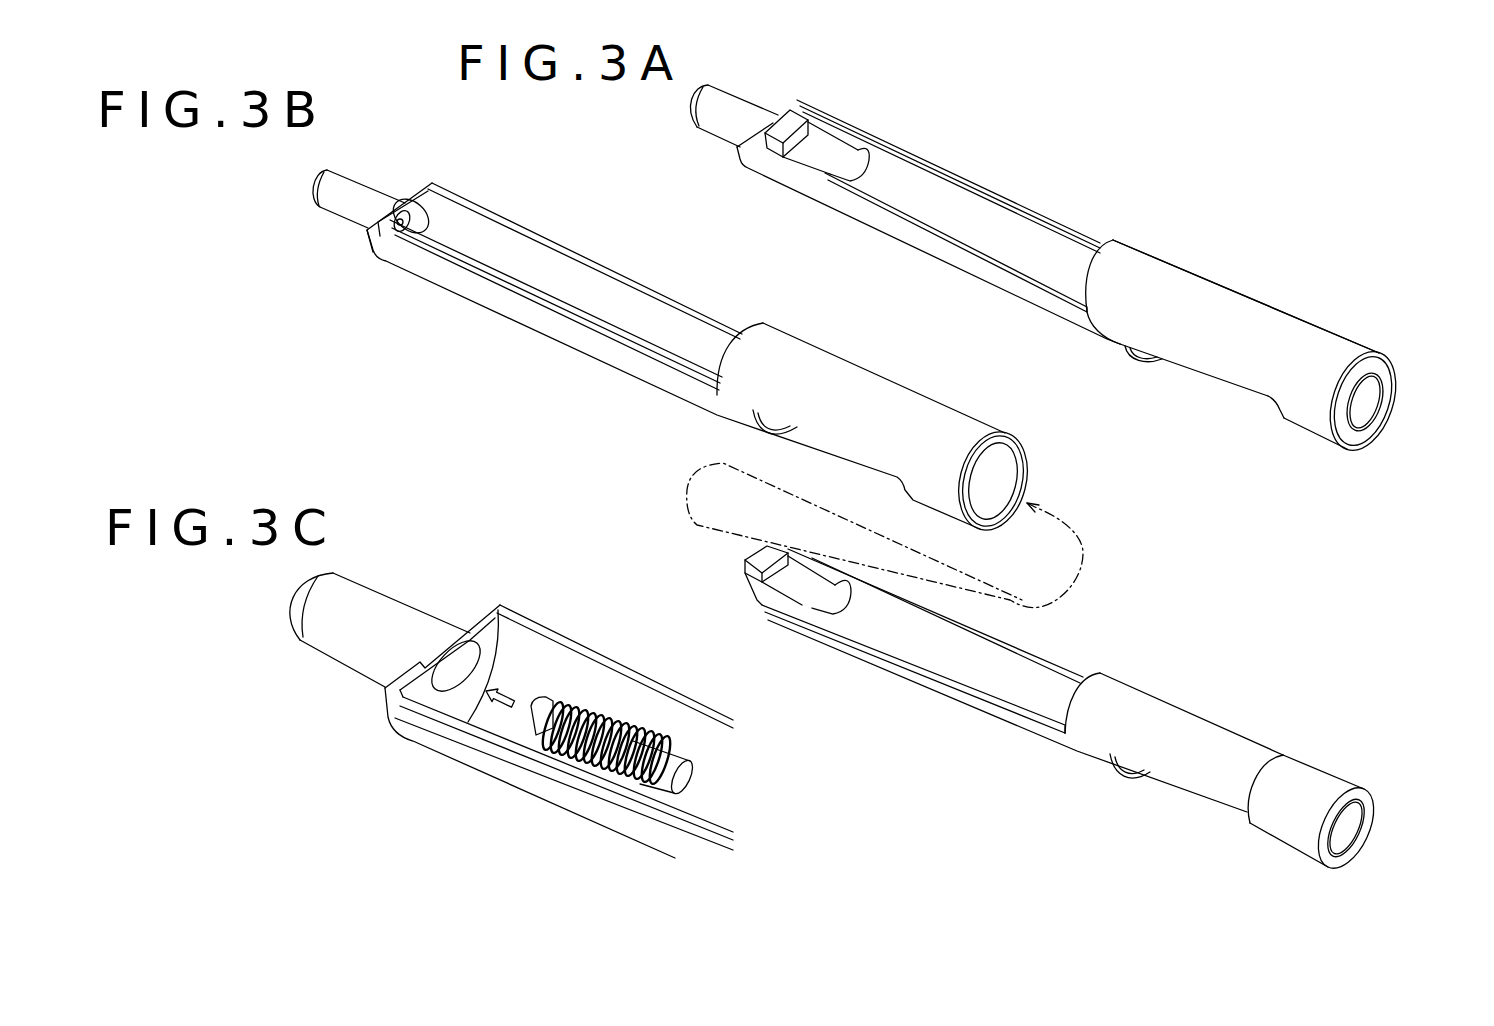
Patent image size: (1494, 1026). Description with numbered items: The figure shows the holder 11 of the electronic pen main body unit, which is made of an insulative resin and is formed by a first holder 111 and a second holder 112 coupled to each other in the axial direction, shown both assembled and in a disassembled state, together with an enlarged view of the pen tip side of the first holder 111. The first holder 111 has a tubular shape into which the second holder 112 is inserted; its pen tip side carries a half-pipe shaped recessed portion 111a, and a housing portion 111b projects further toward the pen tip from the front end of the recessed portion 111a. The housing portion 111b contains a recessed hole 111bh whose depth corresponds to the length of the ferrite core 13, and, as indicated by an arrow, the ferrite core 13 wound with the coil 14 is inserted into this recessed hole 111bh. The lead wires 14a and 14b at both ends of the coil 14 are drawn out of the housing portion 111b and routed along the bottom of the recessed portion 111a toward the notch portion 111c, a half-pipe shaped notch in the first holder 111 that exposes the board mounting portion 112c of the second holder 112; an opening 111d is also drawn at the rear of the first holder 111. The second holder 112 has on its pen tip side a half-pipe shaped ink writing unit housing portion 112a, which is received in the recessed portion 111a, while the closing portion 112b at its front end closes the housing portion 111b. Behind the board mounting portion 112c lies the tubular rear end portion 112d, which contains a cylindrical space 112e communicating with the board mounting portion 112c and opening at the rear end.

In FIG. 3A, the holder 11 is at (1224, 280).
In FIG. 3A, the first holder 111 is at (912, 240).
In FIG. 3B, the first holder 111 is at (847, 373).
In FIG. 3C, the first holder 111 is at (640, 828).
In FIG. 3B, the recessed portion 111a is at (520, 247).
In FIG. 3C, the recessed portion 111a is at (687, 717).
In FIG. 3A, the housing portion 111b is at (733, 122).
In FIG. 3B, the housing portion 111b is at (360, 190).
In FIG. 3C, the housing portion 111b is at (387, 607).
In FIG. 3C, the recessed hole 111bh is at (458, 678).
In FIG. 3A, the notch portion 111c is at (1177, 358).
In FIG. 3B, the notch portion 111c is at (833, 452).
In FIG. 3B, the opening 111d is at (1012, 474).
In FIG. 3A, the second holder 112 is at (1103, 242).
In FIG. 3B, the second holder 112 is at (1163, 712).
In FIG. 3A, the ink writing unit housing portion 112a is at (953, 197).
In FIG. 3B, the ink writing unit housing portion 112a is at (917, 647).
In FIG. 3A, the closing portion 112b is at (792, 110).
In FIG. 3B, the closing portion 112b is at (762, 554).
In FIG. 3A, the board mounting portion 112c is at (1250, 392).
In FIG. 3B, the board mounting portion 112c is at (1170, 780).
In FIG. 3A, the rear end portion 112d is at (1383, 372).
In FIG. 3B, the rear end portion 112d is at (1307, 777).
In FIG. 3A, the cylindrical space 112e is at (1368, 417).
In FIG. 3B, the cylindrical space 112e is at (1343, 835).
In FIG. 3B, the ferrite core 13 is at (430, 212).
In FIG. 3C, the ferrite core 13 is at (548, 705).
In FIG. 3C, the coil 14 is at (623, 705).
In FIG. 3B, the lead wire 14a is at (585, 310).
In FIG. 3C, the lead wire 14a is at (707, 793).
In FIG. 3B, the lead wire 14b is at (637, 343).
In FIG. 3C, the lead wire 14b is at (683, 820).